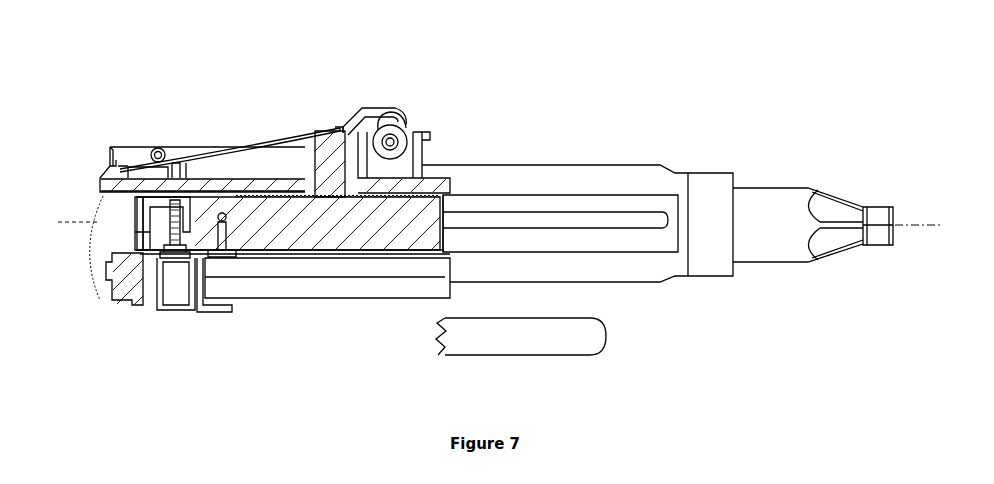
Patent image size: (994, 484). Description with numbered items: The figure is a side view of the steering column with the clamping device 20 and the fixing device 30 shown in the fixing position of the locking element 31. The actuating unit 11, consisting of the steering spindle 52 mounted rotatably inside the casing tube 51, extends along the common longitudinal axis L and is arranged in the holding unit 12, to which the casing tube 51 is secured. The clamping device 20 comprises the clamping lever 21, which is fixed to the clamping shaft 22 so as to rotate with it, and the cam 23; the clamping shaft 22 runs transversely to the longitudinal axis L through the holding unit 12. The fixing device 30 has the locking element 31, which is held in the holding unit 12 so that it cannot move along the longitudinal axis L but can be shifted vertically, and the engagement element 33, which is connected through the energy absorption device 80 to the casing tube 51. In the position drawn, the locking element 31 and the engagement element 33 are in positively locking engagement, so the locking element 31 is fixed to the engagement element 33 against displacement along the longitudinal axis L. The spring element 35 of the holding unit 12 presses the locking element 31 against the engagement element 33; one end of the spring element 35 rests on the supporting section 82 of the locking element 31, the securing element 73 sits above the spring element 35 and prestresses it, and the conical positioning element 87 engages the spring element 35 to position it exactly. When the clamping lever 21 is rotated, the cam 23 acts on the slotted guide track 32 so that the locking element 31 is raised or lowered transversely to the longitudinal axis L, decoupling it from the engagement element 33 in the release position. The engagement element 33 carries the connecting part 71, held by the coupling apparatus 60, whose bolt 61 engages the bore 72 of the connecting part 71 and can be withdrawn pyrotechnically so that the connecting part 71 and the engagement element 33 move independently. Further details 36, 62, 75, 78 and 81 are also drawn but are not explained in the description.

The actuating unit 11 is at (648, 170).
The holding unit 12 is at (205, 182).
The clamping device 20 is at (100, 162).
The clamping lever 21 is at (600, 338).
The clamping shaft 22 is at (415, 150).
The cam 23 is at (402, 134).
The fixing device 30 is at (349, 82).
The locking element 31 is at (342, 137).
The slotted guide track 32 is at (394, 116).
The engagement element 33 is at (300, 242).
The spring element 35 is at (235, 196).
The cover top 36 is at (360, 108).
The casing tube 51 is at (700, 192).
The steering spindle 52 is at (762, 208).
The coupling apparatus 60 is at (131, 310).
The bolt 61 is at (170, 228).
The lock block 62 is at (180, 282).
The connecting part 71 is at (135, 212).
The bore 72 is at (150, 166).
The securing element 73 is at (158, 147).
The lock lever 75 is at (147, 256).
The release pin 78 is at (224, 212).
The energy absorption device 80 is at (462, 206).
The slide rail 81 is at (610, 205).
The supporting section 82 is at (320, 132).
The positioning element 87 is at (112, 150).
The longitudinal axis L is at (926, 222).